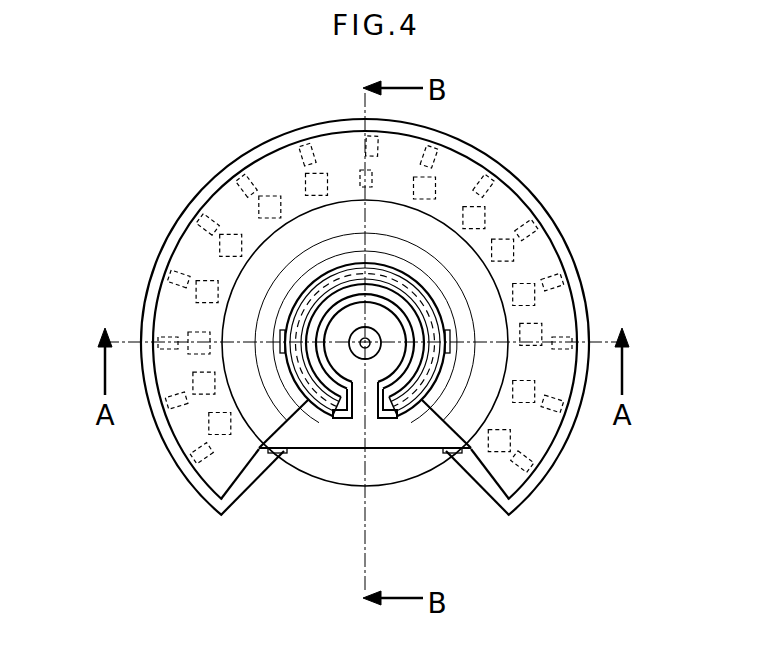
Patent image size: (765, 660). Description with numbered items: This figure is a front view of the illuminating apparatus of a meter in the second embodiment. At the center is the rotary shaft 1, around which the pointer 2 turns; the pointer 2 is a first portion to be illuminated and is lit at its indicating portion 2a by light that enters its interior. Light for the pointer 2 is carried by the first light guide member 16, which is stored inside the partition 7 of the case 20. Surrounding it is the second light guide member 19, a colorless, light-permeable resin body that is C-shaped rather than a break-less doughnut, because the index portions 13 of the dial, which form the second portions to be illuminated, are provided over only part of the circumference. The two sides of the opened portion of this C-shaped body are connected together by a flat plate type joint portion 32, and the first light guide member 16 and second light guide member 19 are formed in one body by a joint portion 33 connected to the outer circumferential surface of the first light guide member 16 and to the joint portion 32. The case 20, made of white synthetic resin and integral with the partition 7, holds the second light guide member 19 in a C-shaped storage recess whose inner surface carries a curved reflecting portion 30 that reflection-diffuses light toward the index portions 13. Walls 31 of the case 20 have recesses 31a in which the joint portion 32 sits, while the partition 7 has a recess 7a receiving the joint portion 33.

The rotary shaft 1 is at (380, 353).
The pointer 2 is at (421, 288).
The indicating portion 2a is at (210, 332).
The partition 7 is at (212, 488).
The recess 7a is at (332, 418).
The index portions 13 is at (292, 146).
The first light guide member 16 is at (388, 323).
The second light guide member 19 is at (252, 288).
The case 20 is at (533, 505).
The reflecting portion 30 is at (185, 420).
The walls 31 is at (238, 495).
The recesses 31a is at (287, 455).
The joint portion 32 is at (307, 436).
The joint portion 33 is at (383, 405).